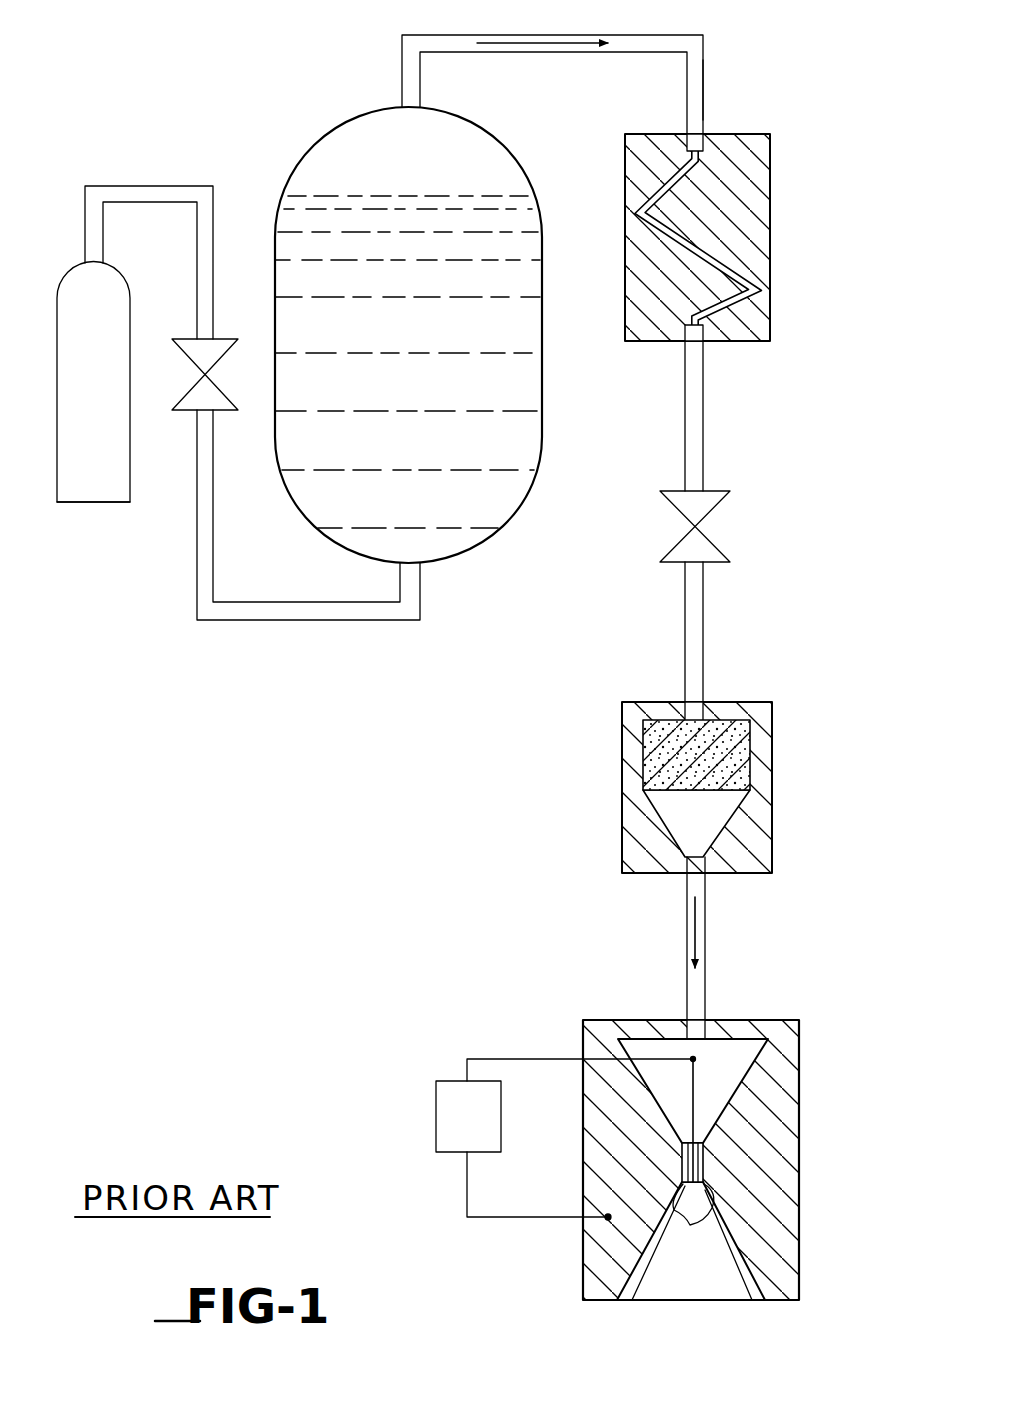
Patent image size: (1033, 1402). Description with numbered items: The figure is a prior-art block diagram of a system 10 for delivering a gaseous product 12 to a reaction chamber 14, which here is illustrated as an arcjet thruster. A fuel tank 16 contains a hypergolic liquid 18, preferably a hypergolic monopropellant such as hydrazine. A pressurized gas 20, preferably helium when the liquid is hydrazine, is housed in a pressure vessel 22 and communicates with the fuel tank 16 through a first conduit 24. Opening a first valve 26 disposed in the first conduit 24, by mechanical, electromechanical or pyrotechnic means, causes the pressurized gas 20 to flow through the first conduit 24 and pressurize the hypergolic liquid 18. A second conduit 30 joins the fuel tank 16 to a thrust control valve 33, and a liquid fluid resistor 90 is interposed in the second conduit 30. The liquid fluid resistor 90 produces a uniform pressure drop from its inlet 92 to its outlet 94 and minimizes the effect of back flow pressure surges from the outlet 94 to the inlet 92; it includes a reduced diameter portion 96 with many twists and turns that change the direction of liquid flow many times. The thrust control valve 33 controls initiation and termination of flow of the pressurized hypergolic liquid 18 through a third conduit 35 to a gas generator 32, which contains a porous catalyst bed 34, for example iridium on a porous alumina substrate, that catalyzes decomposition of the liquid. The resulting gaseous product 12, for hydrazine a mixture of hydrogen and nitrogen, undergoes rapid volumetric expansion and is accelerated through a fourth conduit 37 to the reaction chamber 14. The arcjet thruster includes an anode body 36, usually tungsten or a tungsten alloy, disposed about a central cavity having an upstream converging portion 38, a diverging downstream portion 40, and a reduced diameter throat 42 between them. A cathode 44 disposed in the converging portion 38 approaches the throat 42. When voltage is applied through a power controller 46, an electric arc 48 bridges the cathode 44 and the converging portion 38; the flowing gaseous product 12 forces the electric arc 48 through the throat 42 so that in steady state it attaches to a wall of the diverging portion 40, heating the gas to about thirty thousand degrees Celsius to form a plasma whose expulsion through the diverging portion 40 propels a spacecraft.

The system 10 is at (176, 142).
The gaseous product 12 is at (690, 940).
The reaction chamber 14 is at (723, 1159).
The fuel tank 16 is at (508, 390).
The hypergolic liquid 18 is at (507, 35).
The pressurized gas 20 is at (115, 322).
The pressure vessel 22 is at (95, 504).
The first conduit 24 is at (175, 196).
The first valve 26 is at (193, 411).
The second conduit 30 is at (700, 75).
The gas generator 32 is at (727, 787).
The thrust control valve 33 is at (700, 550).
The porous catalyst bed 34 is at (735, 758).
The third conduit 35 is at (702, 627).
The anode body 36 is at (778, 1133).
The fourth conduit 37 is at (707, 900).
The upstream converging portion 38 is at (735, 1080).
The diverging downstream portion 40 is at (748, 1283).
The throat 42 is at (702, 1164).
The cathode 44 is at (696, 1087).
The power controller 46 is at (445, 1118).
The electric arc 48 is at (640, 1280).
The liquid fluid resistor 90 is at (704, 245).
The inlet 92 is at (702, 136).
The outlet 94 is at (706, 342).
The reduced diameter portion 96 is at (682, 246).